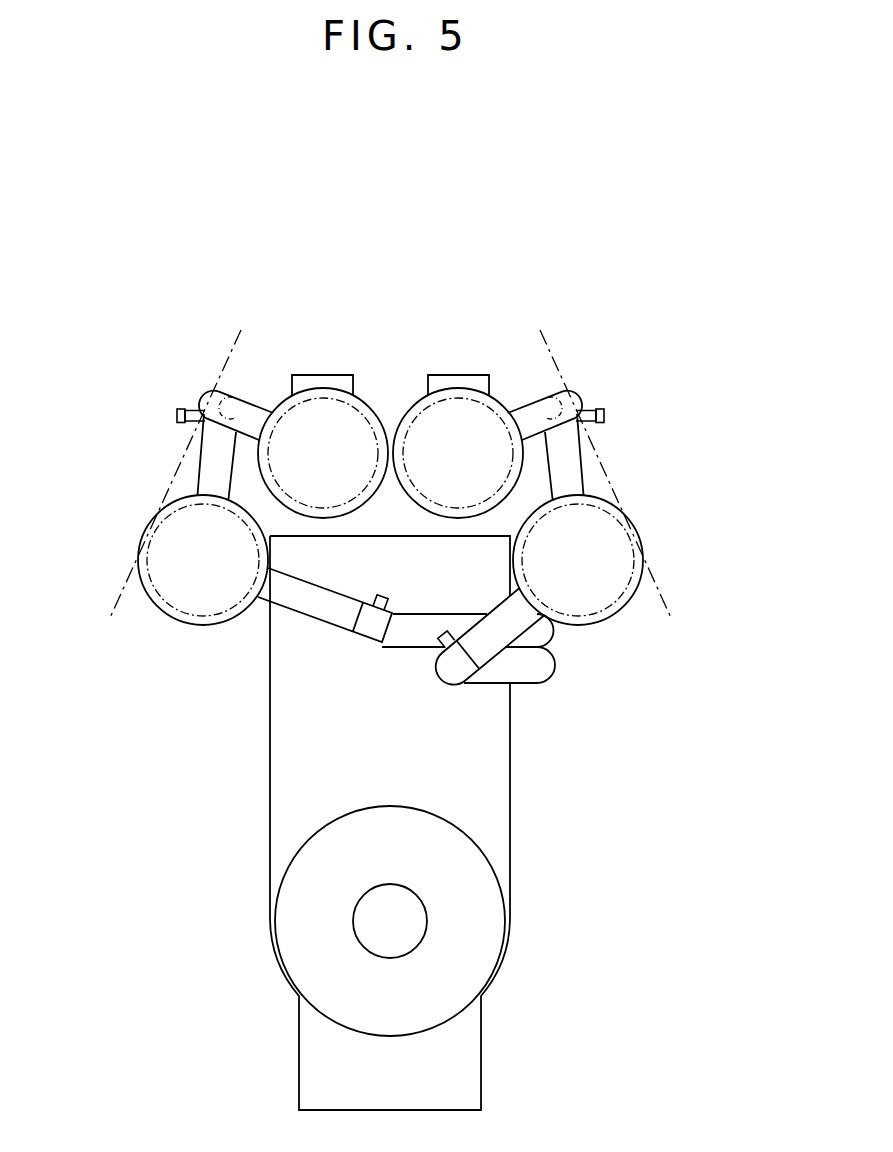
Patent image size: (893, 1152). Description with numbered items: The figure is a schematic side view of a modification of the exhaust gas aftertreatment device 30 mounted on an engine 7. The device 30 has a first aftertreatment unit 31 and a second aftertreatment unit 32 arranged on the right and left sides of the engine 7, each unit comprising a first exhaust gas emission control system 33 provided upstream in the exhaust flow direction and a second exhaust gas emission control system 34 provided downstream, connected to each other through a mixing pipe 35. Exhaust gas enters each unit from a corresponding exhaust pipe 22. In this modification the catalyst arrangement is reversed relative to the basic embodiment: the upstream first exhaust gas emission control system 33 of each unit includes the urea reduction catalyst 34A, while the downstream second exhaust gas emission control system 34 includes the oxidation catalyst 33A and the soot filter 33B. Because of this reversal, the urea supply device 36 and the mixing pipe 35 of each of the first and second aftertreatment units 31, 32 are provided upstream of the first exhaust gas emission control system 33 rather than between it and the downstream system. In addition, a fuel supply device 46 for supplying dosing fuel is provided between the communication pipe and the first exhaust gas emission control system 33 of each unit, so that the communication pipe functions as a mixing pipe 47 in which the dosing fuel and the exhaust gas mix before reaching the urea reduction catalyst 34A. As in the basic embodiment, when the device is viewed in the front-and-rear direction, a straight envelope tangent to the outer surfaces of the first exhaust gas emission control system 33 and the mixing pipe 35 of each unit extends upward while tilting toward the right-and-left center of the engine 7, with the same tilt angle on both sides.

The engine 7 is at (497, 268).
The exhaust pipe 22 is at (393, 648).
The exhaust gas aftertreatment device 30 is at (315, 327).
The first aftertreatment unit 31 is at (655, 447).
The second aftertreatment unit 32 is at (125, 445).
The first exhaust gas emission control system 33 is at (150, 525).
The oxidation catalyst 33A is at (375, 400).
The soot filter 33B is at (420, 402).
The second exhaust gas emission control system 34 is at (288, 410).
The urea reduction catalyst 34A is at (160, 600).
The mixing pipe 35 is at (315, 612).
The urea supply device 36 is at (383, 596).
The fuel supply device 46 is at (180, 414).
The mixing pipe for dosing fuel and exhaust gas 47 is at (247, 392).